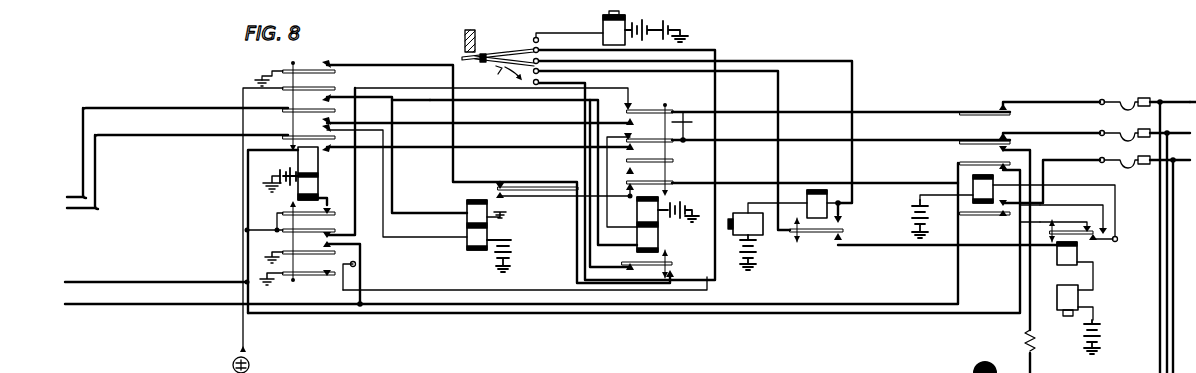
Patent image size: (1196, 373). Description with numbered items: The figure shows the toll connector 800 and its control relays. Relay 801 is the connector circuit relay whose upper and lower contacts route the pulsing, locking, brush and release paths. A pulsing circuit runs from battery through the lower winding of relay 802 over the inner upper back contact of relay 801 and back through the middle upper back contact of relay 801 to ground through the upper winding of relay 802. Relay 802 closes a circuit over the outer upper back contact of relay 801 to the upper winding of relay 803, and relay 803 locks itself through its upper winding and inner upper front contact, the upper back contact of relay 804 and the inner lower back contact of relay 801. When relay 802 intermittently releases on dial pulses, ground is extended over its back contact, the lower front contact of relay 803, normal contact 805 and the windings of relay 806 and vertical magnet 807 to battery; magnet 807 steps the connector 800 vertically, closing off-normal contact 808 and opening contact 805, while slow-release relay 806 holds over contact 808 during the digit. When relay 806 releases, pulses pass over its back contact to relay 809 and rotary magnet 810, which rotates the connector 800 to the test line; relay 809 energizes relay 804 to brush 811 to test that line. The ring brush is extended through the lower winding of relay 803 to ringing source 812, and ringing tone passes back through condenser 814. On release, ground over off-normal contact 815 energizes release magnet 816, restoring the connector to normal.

The connector 800 is at (1154, 86).
The relay 801 is at (308, 163).
The relay 802 is at (468, 210).
The relay 803 is at (658, 236).
The relay 804 is at (983, 203).
The normal contact 805 is at (494, 68).
The relay 806 is at (817, 190).
The vertical magnet 807 is at (745, 202).
The off-normal contact 808 is at (520, 80).
The relay 809 is at (1067, 252).
The rotary magnet 810 is at (1078, 297).
The brush 811 is at (1110, 164).
The ringing source 812 is at (250, 365).
The condenser 814 is at (694, 123).
The off-normal contact 815 is at (496, 49).
The release magnet 816 is at (603, 24).